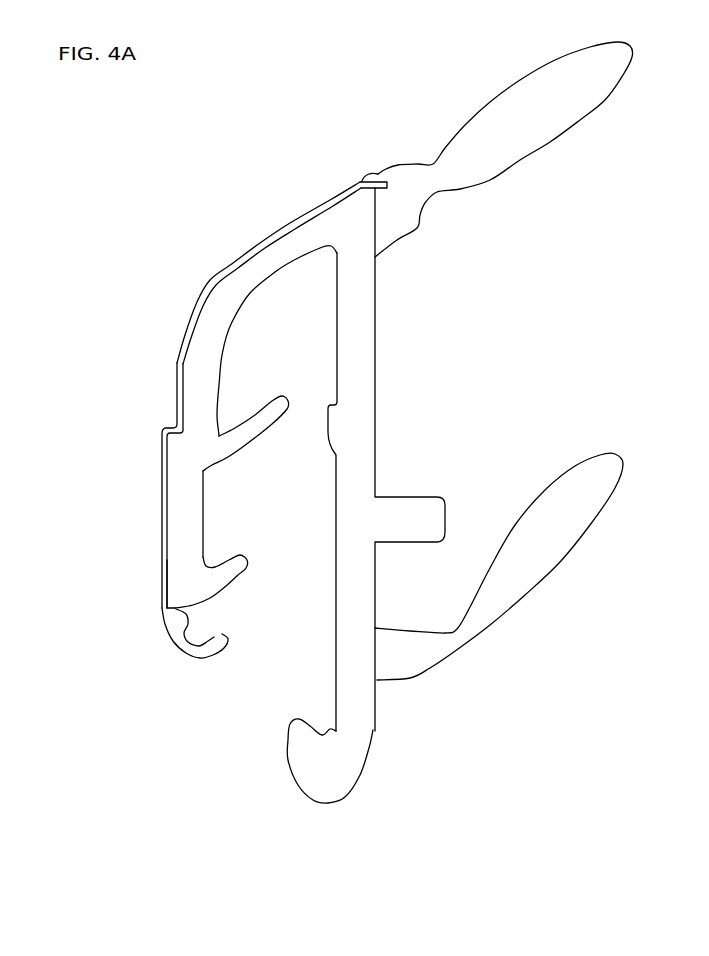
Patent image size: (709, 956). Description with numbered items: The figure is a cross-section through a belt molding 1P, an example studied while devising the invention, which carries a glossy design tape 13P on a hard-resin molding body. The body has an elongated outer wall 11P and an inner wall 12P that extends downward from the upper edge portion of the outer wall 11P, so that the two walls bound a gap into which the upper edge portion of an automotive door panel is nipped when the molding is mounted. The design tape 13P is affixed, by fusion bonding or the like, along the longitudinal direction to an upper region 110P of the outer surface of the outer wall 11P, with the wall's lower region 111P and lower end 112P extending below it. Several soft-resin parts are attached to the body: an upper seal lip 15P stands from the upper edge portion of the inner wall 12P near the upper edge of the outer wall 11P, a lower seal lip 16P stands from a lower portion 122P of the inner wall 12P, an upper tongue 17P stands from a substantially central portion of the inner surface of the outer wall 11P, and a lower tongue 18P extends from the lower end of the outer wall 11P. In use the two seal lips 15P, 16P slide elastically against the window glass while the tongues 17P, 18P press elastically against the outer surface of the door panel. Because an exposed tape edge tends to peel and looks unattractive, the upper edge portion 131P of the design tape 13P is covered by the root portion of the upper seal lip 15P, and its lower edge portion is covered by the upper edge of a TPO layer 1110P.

The belt molding 1P is at (214, 262).
The outer wall 11P is at (197, 347).
The inner wall 12P is at (360, 343).
The design tape 13P is at (253, 243).
The upper seal lip 15P is at (595, 93).
The lower seal lip 16P is at (590, 505).
The upper tongue 17P is at (268, 425).
The lower tongue 18P is at (198, 653).
The upper portion of first arm 110P is at (305, 238).
The lower portion of first arm 111P is at (175, 538).
The tip of first arm 112P is at (240, 572).
The foot of second arm 122P is at (303, 735).
The upper edge portion of the design tape 131P is at (382, 177).
The TPO layer 1110P is at (170, 580).